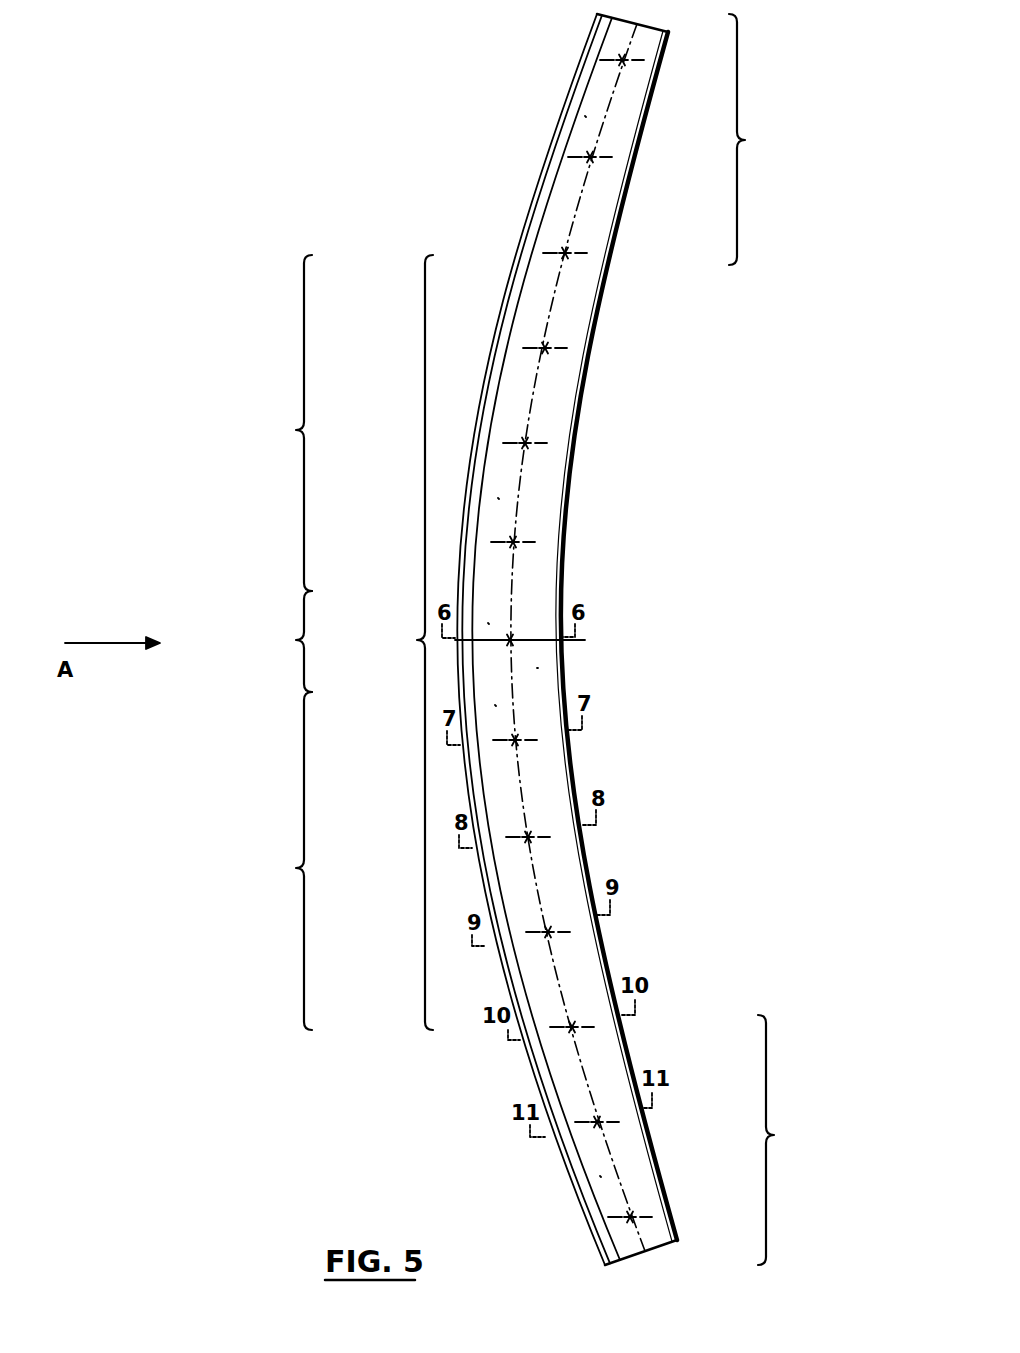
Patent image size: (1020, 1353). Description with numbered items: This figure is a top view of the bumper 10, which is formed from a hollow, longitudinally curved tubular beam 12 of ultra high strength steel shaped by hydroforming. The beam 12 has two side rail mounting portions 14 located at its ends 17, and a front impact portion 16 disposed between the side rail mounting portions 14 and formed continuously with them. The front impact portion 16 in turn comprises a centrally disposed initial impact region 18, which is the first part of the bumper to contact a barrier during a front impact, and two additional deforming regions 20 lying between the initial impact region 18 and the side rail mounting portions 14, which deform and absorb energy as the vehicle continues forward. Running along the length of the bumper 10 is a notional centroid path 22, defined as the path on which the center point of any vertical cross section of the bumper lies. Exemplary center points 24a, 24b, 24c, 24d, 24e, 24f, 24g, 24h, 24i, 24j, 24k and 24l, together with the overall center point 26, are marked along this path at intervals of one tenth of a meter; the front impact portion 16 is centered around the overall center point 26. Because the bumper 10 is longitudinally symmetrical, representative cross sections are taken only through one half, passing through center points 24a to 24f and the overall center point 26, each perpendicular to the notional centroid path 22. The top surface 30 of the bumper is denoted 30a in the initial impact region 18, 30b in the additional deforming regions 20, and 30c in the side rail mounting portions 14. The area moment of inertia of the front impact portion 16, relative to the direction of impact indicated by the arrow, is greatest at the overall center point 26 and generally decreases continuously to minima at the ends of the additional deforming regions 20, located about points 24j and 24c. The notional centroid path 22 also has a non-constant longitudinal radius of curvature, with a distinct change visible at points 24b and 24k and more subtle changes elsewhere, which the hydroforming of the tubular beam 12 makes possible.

The bumper 10 is at (322, 182).
The tubular beam 12 is at (553, 125).
The side rail mounting portions 14 is at (773, 639).
The front impact portion 16 is at (408, 642).
The ends 17 is at (573, 48).
The initial impact region 18 is at (288, 641).
The additional deforming regions 20 is at (288, 642).
The notional centroid path 22 is at (523, 790).
The center point 24a is at (634, 1214).
The center point 24b is at (601, 1124).
The center point 24c is at (576, 1029).
The center point 24d is at (552, 934).
The center point 24e is at (532, 839).
The center point 24f is at (519, 742).
The center point 24g is at (517, 539).
The center point 24h is at (529, 440).
The center point 24i is at (549, 345).
The center point 24j is at (569, 250).
The center point 24k is at (594, 154).
The center point 24l is at (626, 57).
The overall center point 26 is at (514, 638).
The top surface 30 is at (537, 668).
The top surface of initial impact region 30a is at (488, 623).
The top surface of additional deforming regions 30b is at (498, 498).
The top surface of side rail mounting portions 30c is at (585, 116).